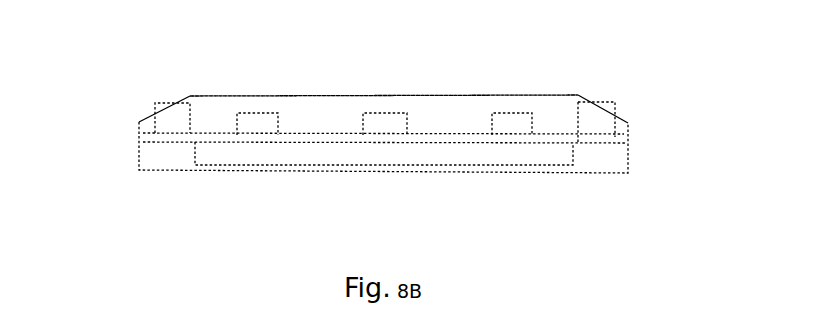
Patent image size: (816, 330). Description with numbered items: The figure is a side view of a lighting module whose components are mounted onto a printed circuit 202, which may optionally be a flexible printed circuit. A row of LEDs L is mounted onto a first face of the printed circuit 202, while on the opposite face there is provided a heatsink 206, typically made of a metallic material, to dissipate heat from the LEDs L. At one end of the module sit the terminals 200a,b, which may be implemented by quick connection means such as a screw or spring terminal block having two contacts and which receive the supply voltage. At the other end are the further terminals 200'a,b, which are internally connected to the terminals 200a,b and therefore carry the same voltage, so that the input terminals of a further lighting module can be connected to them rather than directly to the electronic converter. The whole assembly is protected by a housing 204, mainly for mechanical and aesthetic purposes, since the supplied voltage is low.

The terminals 200a,b is at (151, 101).
The further terminals 200'a,b is at (647, 96).
The printed circuit 202 is at (619, 147).
The housing 204 is at (435, 94).
The heatsink 206 is at (492, 169).
The LEDs L is at (241, 110).